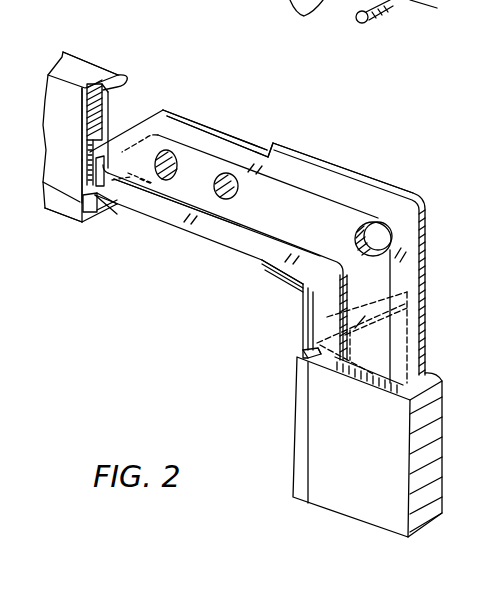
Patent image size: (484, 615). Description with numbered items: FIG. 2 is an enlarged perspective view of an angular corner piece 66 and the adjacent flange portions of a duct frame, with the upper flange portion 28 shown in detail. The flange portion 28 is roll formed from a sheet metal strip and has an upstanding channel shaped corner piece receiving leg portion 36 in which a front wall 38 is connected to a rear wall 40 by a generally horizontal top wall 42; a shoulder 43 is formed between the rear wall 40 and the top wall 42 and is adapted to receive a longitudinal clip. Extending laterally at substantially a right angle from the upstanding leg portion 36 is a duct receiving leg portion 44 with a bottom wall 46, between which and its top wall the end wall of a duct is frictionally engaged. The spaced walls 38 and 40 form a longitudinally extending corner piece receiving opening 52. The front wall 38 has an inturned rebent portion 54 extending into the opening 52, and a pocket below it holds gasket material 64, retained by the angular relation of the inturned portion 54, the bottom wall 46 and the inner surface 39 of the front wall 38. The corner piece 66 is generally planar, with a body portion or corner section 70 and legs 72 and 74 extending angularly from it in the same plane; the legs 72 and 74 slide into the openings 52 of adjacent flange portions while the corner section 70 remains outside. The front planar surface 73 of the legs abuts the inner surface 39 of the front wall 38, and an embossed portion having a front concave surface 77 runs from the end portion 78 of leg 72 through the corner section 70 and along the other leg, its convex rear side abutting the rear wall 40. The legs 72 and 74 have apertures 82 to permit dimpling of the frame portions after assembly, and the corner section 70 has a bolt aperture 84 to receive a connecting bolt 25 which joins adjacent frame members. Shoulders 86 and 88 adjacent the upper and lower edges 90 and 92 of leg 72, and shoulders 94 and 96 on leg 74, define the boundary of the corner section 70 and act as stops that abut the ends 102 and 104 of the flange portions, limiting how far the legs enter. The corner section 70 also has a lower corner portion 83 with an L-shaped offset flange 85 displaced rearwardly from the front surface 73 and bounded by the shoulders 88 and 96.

The bolt 25 is at (377, 16).
The upper flange portion 28 is at (82, 57).
The upstanding corner piece receiving leg portion 36 is at (481, 89).
The front wall 38 is at (76, 115).
The inner surface of front wall 39 is at (78, 207).
The rear wall 40 is at (110, 104).
The top wall 42 is at (87, 78).
The shoulder 43 is at (122, 74).
The duct receiving leg portion 44 is at (115, 213).
The bottom wall 46 is at (103, 210).
The corner piece receiving opening 52 is at (115, 84).
The inturned rebent portion 54 is at (74, 185).
The gasket material 64 is at (98, 212).
The angular corner piece 66 is at (403, 203).
The corner section 70 is at (308, 194).
The leg 72 is at (170, 114).
The front planar surface 73 is at (222, 233).
The leg 74 is at (407, 378).
The front concave surface 77 is at (294, 230).
The end portion of leg 78 is at (99, 160).
The aperture 82 is at (170, 178).
The lower corner portion 83 is at (269, 289).
The bolt aperture 84 is at (376, 222).
The L-shaped flange 85 is at (306, 312).
The shoulder 86 is at (270, 148).
The shoulder 88 is at (262, 265).
The upper edge of leg 90 is at (202, 122).
The lower edge of leg 92 is at (195, 233).
The shoulder 94 is at (416, 388).
The shoulder 96 is at (303, 350).
The end of flange portion 102 is at (83, 212).
The end of flange portion 104 is at (308, 358).